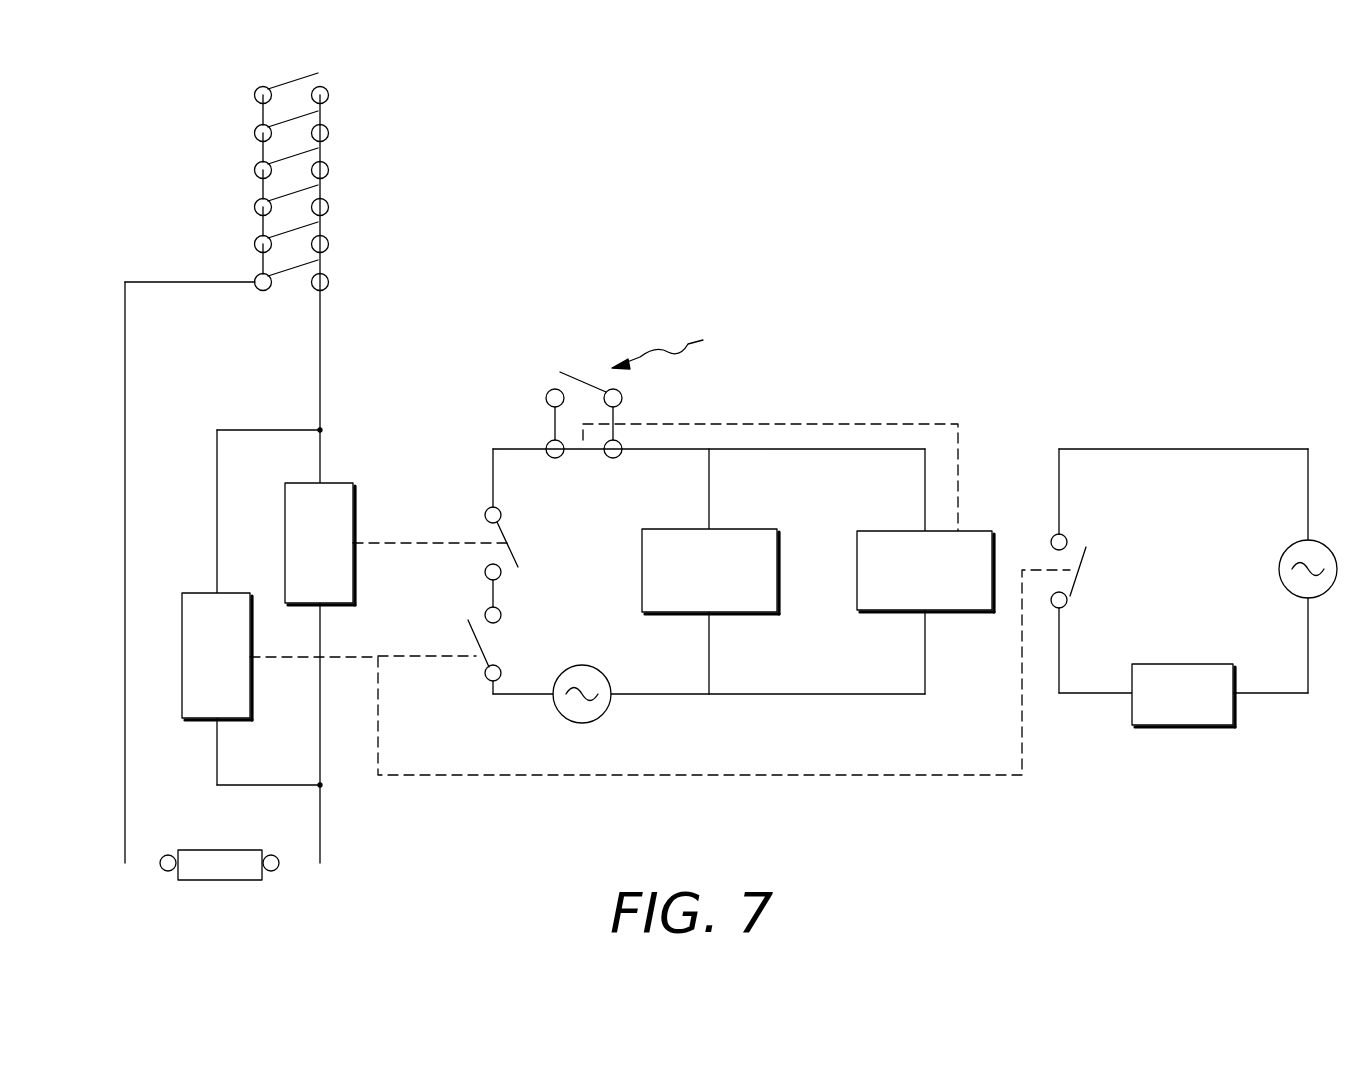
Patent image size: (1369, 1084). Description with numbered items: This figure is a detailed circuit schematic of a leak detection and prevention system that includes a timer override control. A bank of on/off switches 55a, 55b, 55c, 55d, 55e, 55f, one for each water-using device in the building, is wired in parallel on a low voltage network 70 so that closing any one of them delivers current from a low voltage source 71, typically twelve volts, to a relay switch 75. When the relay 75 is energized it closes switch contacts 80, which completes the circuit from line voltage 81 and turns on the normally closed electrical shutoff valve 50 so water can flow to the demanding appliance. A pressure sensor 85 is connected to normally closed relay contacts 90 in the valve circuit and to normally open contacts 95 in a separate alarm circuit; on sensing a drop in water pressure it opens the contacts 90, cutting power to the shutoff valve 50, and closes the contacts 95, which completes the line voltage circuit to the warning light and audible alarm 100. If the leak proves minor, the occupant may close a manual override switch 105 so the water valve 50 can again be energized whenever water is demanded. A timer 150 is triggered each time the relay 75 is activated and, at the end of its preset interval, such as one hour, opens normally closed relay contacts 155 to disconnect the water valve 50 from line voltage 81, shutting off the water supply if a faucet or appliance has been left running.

The electrical shutoff valve 50 is at (748, 529).
The on/off switch 55a is at (329, 282).
The on/off switch 55b is at (329, 244).
The on/off switch 55c is at (329, 207).
The on/off switch 55d is at (329, 170).
The on/off switch 55e is at (329, 133).
The on/off switch 55f is at (329, 95).
The low voltage network 70 is at (330, 361).
The low voltage source 71 is at (212, 866).
The relay switch 75 is at (335, 483).
The switch contacts 80 is at (484, 514).
The line voltage 81 is at (584, 724).
The pressure sensor 85 is at (900, 612).
The normally closed relay contacts 90 is at (555, 458).
The normally open contacts 95 is at (1068, 603).
The warning light and audible alarm 100 is at (1196, 664).
The manual override switch 105 is at (593, 378).
The timer 150 is at (182, 650).
The normally closed relay contacts 155 is at (484, 612).